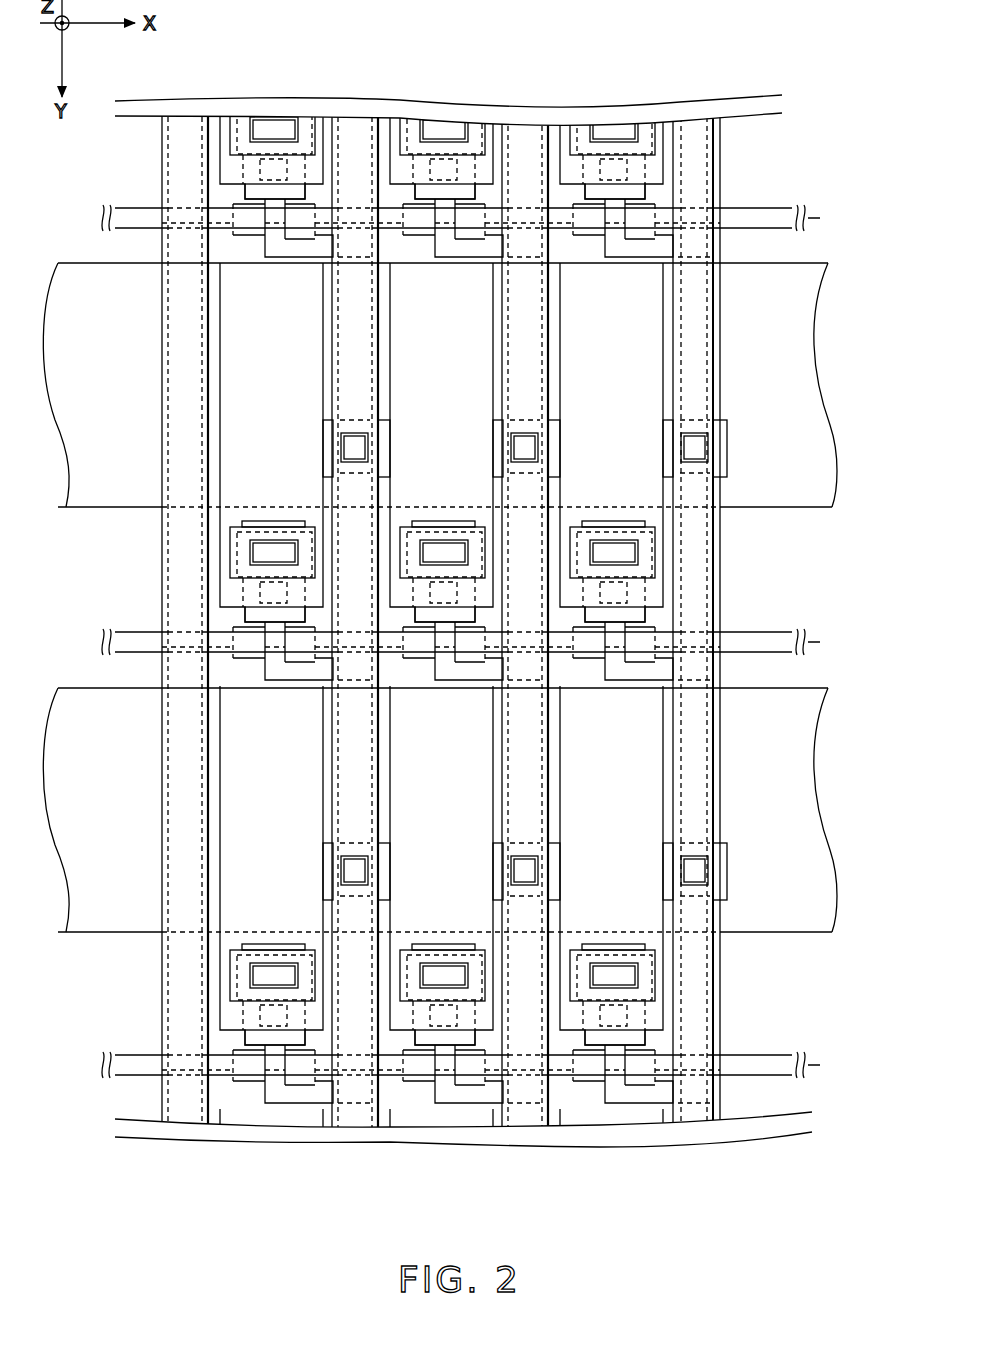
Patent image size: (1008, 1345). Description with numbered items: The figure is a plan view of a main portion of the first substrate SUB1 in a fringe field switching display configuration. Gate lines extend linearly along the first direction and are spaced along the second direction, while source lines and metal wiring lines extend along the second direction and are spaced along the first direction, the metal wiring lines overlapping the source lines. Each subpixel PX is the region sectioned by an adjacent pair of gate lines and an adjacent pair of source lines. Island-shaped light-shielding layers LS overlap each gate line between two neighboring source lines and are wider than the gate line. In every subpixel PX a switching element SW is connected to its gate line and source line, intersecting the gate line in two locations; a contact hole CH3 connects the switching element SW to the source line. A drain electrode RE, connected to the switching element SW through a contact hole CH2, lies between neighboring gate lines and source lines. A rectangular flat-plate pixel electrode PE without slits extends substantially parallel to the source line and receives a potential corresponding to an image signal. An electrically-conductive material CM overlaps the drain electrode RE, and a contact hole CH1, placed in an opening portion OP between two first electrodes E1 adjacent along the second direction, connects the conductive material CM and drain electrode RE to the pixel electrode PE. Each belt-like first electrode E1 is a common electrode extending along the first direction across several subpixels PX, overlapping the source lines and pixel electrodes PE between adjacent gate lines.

The first substrate SUB1 is at (818, 155).
The first electrode E1 is at (814, 408).
The subpixel PX is at (222, 248).
The pixel electrode PE is at (238, 370).
The electrically-conductive material CM is at (232, 521).
The contact hole CH1 is at (240, 536).
The contact hole CH2 is at (262, 590).
The contact hole CH3 is at (357, 432).
The drain electrode RE is at (245, 613).
The light-shielding layer LS is at (233, 628).
The switching element SW is at (263, 671).
The opening portion OP is at (266, 496).